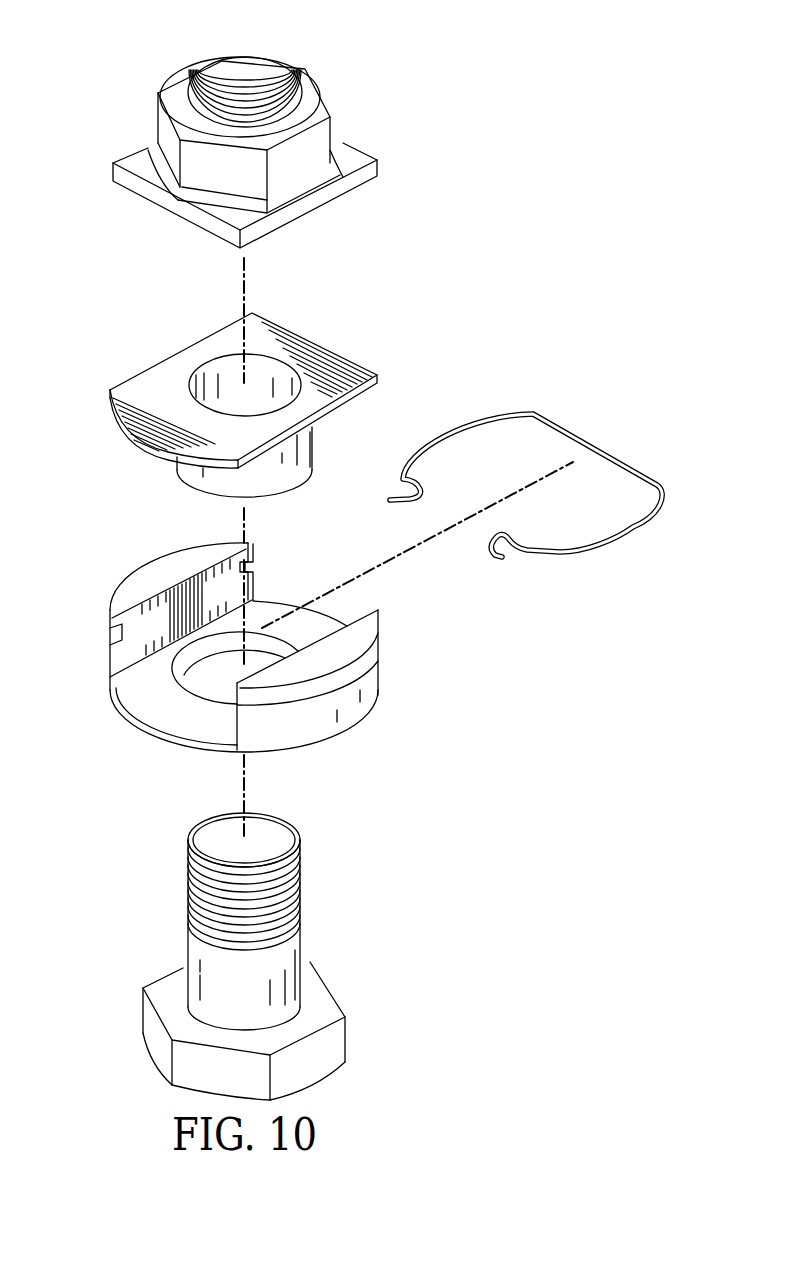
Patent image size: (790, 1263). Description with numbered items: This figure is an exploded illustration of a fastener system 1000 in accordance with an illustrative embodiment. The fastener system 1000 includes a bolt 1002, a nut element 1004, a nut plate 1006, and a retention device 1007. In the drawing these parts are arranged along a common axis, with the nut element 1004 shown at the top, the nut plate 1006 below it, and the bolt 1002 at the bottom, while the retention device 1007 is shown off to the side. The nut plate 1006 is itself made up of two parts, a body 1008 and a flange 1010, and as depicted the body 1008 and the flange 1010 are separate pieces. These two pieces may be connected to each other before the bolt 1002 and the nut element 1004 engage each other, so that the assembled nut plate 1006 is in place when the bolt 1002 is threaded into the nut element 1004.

The fastener system 1000 is at (386, 57).
The bolt 1002 is at (143, 1008).
The nut element 1004 is at (157, 125).
The nut plate 1006 is at (82, 316).
The retention device 1007 is at (626, 427).
The body 1008 is at (378, 385).
The flange 1010 is at (378, 660).